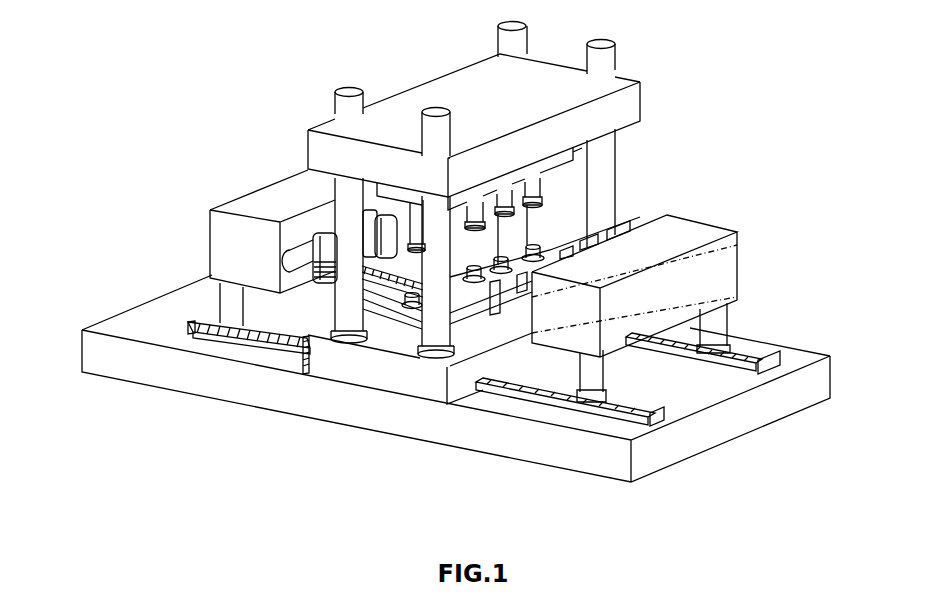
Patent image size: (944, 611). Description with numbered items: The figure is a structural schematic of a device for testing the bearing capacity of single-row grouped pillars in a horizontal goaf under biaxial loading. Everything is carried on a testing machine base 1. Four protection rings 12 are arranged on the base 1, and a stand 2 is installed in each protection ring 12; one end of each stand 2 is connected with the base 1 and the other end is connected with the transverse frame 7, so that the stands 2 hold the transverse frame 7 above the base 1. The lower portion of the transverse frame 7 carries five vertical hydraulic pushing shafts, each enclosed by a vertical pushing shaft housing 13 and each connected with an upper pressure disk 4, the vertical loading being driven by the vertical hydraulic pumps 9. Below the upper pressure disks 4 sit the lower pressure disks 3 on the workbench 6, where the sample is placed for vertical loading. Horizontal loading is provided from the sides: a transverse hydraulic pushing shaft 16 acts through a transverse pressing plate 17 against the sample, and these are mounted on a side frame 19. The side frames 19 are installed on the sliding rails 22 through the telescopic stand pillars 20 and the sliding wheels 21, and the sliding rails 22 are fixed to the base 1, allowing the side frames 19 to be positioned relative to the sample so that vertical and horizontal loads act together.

The base 1 is at (112, 357).
The stand 2 is at (333, 110).
The lower pressure disk 3 is at (600, 228).
The upper pressure disk 4 is at (543, 200).
The workbench 6 is at (737, 250).
The transverse frame 7 is at (307, 153).
The vertical hydraulic pump 9 is at (366, 179).
The protection ring 12 is at (727, 300).
The vertical pushing shaft housing 13 is at (545, 178).
The transverse hydraulic pushing shaft 16 is at (247, 250).
The transverse pressing plate 17 is at (300, 236).
The side frame 19 is at (312, 258).
The telescopic stand pillar 20 is at (217, 300).
The sliding wheel 21 is at (212, 322).
The sliding rail 22 is at (193, 318).